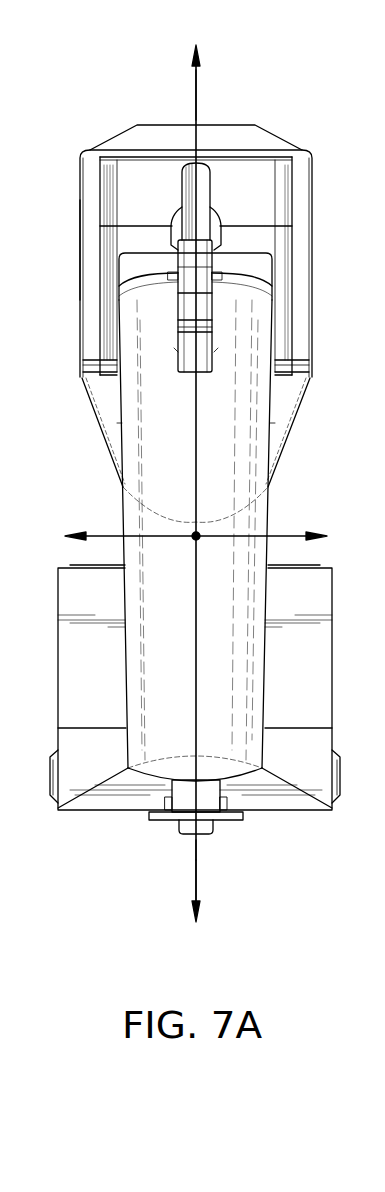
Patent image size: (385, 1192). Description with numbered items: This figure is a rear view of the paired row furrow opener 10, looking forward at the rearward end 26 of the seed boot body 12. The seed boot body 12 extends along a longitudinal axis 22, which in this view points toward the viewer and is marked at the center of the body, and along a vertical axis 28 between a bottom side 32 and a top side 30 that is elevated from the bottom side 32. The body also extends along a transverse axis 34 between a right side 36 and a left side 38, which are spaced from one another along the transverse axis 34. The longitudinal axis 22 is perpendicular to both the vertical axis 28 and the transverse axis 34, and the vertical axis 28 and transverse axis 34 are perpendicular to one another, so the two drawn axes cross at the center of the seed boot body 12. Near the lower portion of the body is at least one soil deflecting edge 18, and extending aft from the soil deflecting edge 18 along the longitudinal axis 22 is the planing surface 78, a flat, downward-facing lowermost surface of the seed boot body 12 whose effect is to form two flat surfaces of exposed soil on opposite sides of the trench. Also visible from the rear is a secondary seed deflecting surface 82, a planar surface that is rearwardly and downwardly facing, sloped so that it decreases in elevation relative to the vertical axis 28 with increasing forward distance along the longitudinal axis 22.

The paired row furrow opener 10 is at (107, 118).
The seed boot body 12 is at (240, 112).
The soil deflecting edge 18 is at (101, 812).
The longitudinal axis 22 is at (200, 534).
The rearward end 26 is at (237, 880).
The vertical axis 28 is at (196, 858).
The top side 30 is at (163, 100).
The bottom side 32 is at (219, 922).
The transverse axis 34 is at (97, 531).
The right side 36 is at (78, 393).
The left side 38 is at (312, 404).
The planing surface 78 is at (252, 812).
The secondary seed deflecting surface 82 is at (70, 767).